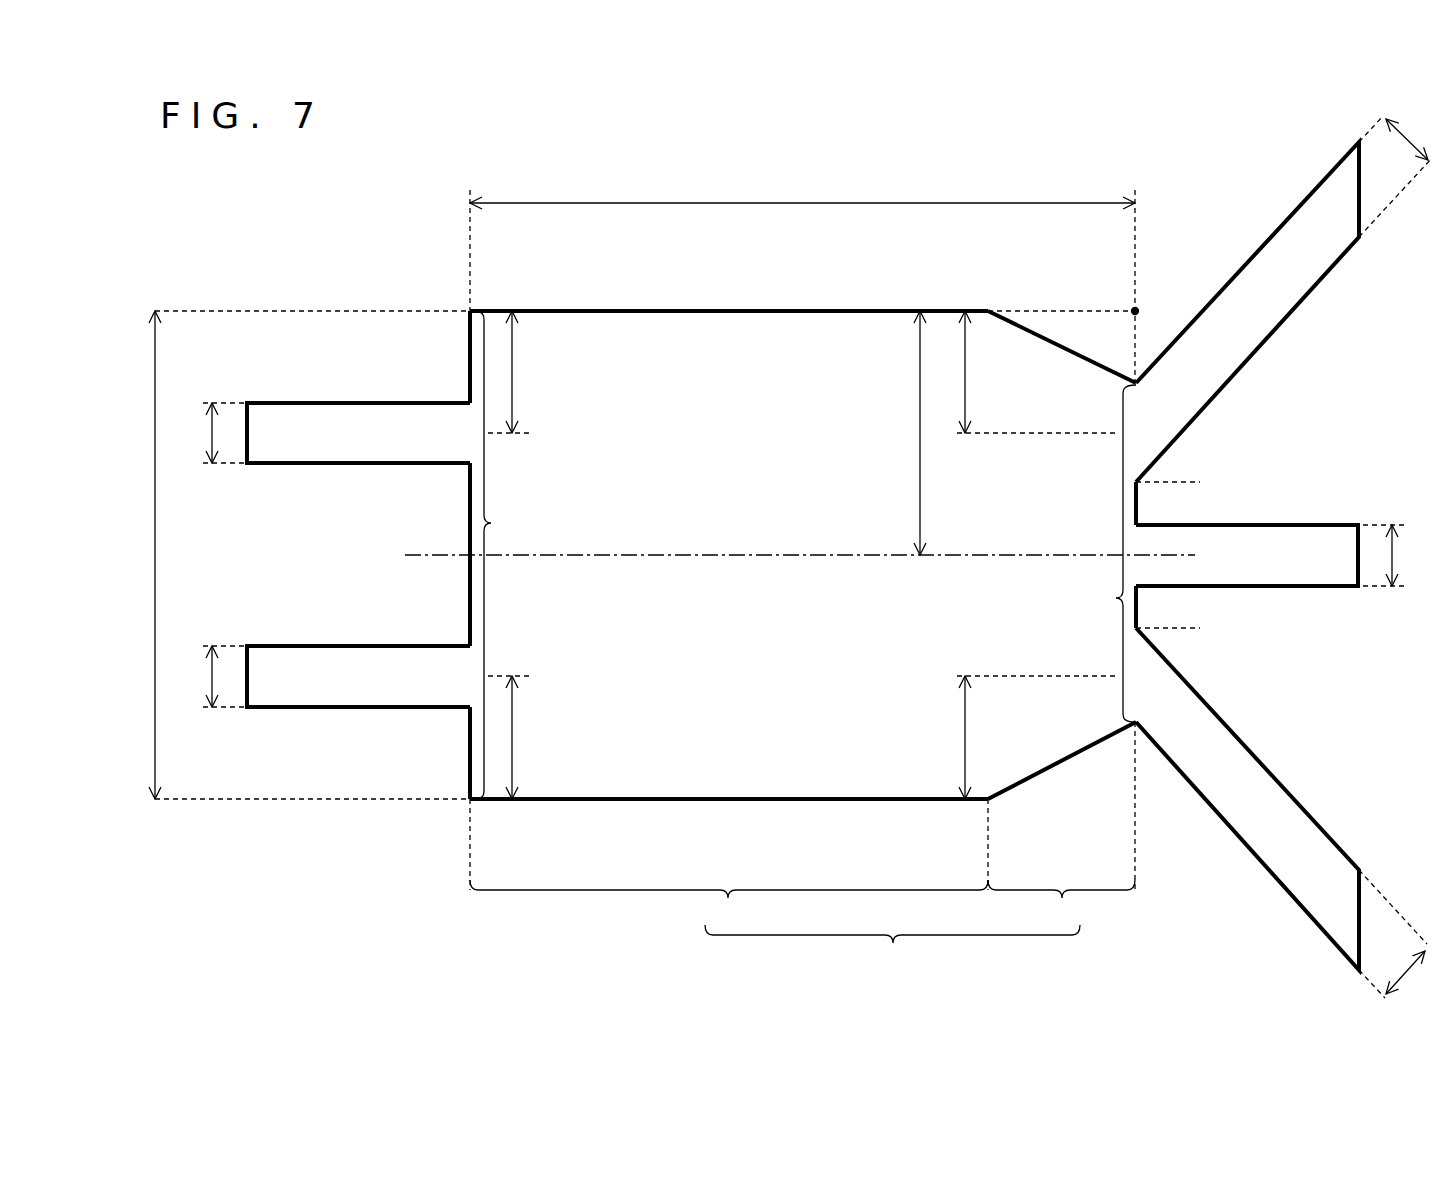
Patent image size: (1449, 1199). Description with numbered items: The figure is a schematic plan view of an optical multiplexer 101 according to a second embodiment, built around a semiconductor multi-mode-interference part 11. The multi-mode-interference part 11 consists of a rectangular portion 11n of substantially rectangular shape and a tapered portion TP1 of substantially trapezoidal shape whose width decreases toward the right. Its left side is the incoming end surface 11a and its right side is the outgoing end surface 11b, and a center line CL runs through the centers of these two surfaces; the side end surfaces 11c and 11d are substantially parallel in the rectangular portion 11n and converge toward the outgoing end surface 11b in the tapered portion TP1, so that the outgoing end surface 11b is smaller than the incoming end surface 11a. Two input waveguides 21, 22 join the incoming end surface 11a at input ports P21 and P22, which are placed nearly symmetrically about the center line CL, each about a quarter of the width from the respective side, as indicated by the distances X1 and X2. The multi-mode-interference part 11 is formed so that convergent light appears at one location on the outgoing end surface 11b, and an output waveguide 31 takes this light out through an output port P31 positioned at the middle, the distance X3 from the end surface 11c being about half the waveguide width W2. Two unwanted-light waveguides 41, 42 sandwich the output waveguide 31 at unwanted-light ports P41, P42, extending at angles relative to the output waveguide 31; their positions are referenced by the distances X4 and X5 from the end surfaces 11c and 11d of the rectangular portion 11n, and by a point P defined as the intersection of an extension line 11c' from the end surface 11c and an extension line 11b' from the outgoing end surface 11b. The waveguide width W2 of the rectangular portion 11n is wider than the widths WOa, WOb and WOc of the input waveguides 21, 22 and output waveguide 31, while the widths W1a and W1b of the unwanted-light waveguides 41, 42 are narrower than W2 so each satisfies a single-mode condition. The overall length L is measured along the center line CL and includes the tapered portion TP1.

The optical multiplexer 101 is at (383, 201).
The multi-mode-interference part 11 is at (840, 601).
The incoming end surface 11a is at (502, 555).
The outgoing end surface 11b is at (1102, 553).
The extension line 11b' is at (1099, 525).
The end surface 11c is at (729, 265).
The extension line 11c' is at (1052, 265).
The end surface 11d is at (808, 803).
The rectangular portion 11n is at (729, 870).
The input waveguide 21 is at (338, 447).
The input waveguide 22 is at (343, 665).
The output waveguide 31 is at (1277, 542).
The unwanted-light waveguide 41 is at (1230, 310).
The unwanted-light waveguide 42 is at (1215, 787).
The point P is at (1136, 306).
The input port P21 is at (466, 432).
The input port P22 is at (466, 678).
The output port P31 is at (1140, 568).
The unwanted-light port P41 is at (1140, 433).
The unwanted-light port P42 is at (1140, 677).
The center line CL is at (440, 557).
The tapered portion TP1 is at (1061, 831).
The length L is at (802, 275).
The waveguide width W2 is at (294, 555).
The waveguide width WOa is at (202, 433).
The waveguide width WOb is at (202, 676).
The waveguide width WOc is at (1402, 555).
The waveguide width W1a is at (1401, 170).
The waveguide width W1b is at (1402, 938).
The distance X1 is at (517, 372).
The distance X2 is at (517, 737).
The distance X3 is at (904, 433).
The distance X4 is at (1023, 372).
The distance X5 is at (1023, 737).